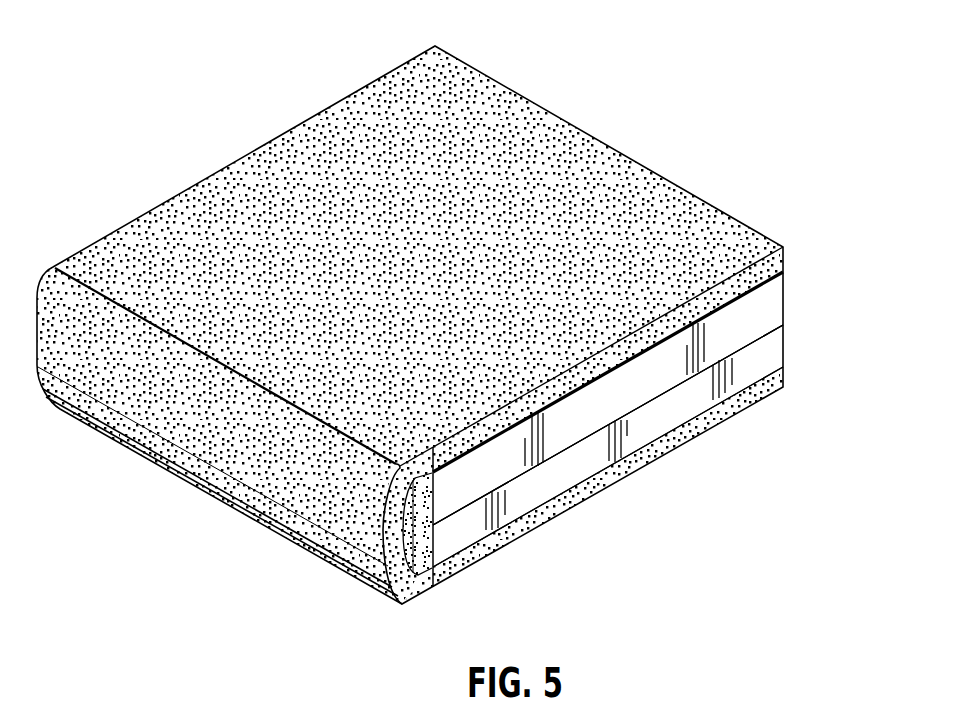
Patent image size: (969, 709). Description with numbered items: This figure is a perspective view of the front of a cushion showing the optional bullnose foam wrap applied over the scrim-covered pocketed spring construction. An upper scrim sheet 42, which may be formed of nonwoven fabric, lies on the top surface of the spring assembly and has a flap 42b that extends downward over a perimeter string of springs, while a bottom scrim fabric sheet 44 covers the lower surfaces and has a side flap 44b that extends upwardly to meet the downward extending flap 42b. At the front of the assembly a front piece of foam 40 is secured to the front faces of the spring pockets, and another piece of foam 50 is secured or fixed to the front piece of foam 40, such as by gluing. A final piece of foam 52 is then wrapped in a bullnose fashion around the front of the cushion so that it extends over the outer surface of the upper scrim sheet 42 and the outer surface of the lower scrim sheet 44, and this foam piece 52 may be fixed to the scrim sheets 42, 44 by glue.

The front piece of foam 40 is at (430, 545).
The upper scrim sheet 42 is at (785, 285).
The flap of upper scrim sheet 42b is at (777, 302).
The bottom scrim fabric sheet 44 is at (785, 355).
The side flap of bottom scrim sheet 44b is at (776, 337).
The piece of foam 50 is at (406, 604).
The final piece of foam 52 is at (233, 187).